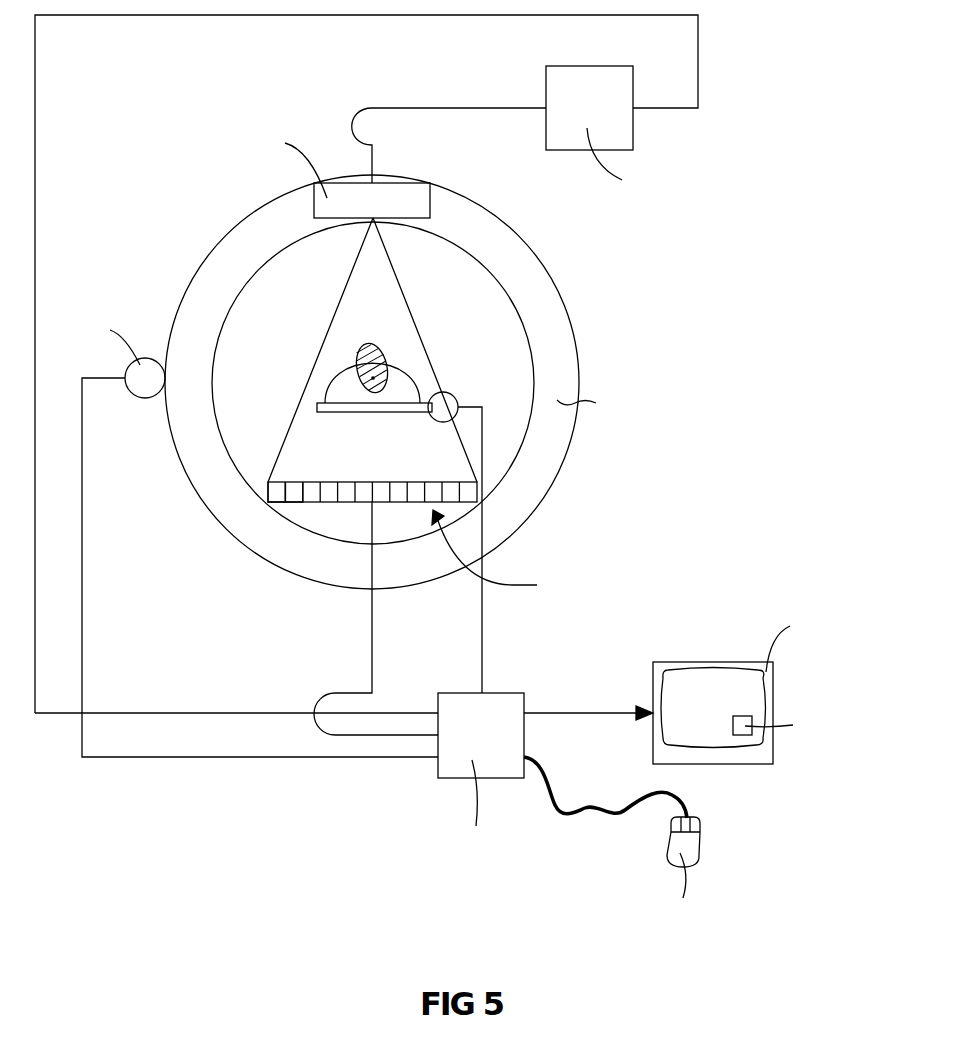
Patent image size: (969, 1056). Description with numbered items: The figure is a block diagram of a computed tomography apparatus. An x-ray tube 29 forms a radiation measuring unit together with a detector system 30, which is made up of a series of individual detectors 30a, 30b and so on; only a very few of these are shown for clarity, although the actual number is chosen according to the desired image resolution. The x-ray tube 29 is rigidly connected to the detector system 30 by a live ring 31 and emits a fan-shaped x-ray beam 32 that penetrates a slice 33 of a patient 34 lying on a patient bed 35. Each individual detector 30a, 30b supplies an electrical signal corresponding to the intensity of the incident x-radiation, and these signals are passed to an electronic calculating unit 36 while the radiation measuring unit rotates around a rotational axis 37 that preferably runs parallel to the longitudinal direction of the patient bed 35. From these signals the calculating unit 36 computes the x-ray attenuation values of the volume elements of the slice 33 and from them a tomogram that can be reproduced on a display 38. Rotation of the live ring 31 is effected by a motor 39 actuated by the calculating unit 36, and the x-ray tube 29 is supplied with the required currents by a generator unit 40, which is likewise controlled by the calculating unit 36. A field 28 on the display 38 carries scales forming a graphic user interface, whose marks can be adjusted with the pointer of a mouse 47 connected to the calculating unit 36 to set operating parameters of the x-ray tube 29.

The field 28 is at (745, 736).
The x-ray tube 29 is at (393, 197).
The detector system 30 is at (400, 504).
The individual detector 30a is at (278, 498).
The individual detector 30b is at (294, 492).
The live ring 31 is at (565, 330).
The x-ray fan beam 32 is at (403, 293).
The slice 33 is at (368, 346).
The patient 34 is at (400, 376).
The patient bed 35 is at (324, 406).
The electronic calculating unit 36 is at (447, 780).
The rotational axis 37 is at (373, 378).
The display 38 is at (697, 662).
The motor 39 is at (137, 388).
The generator unit 40 is at (615, 66).
The mouse 47 is at (700, 845).